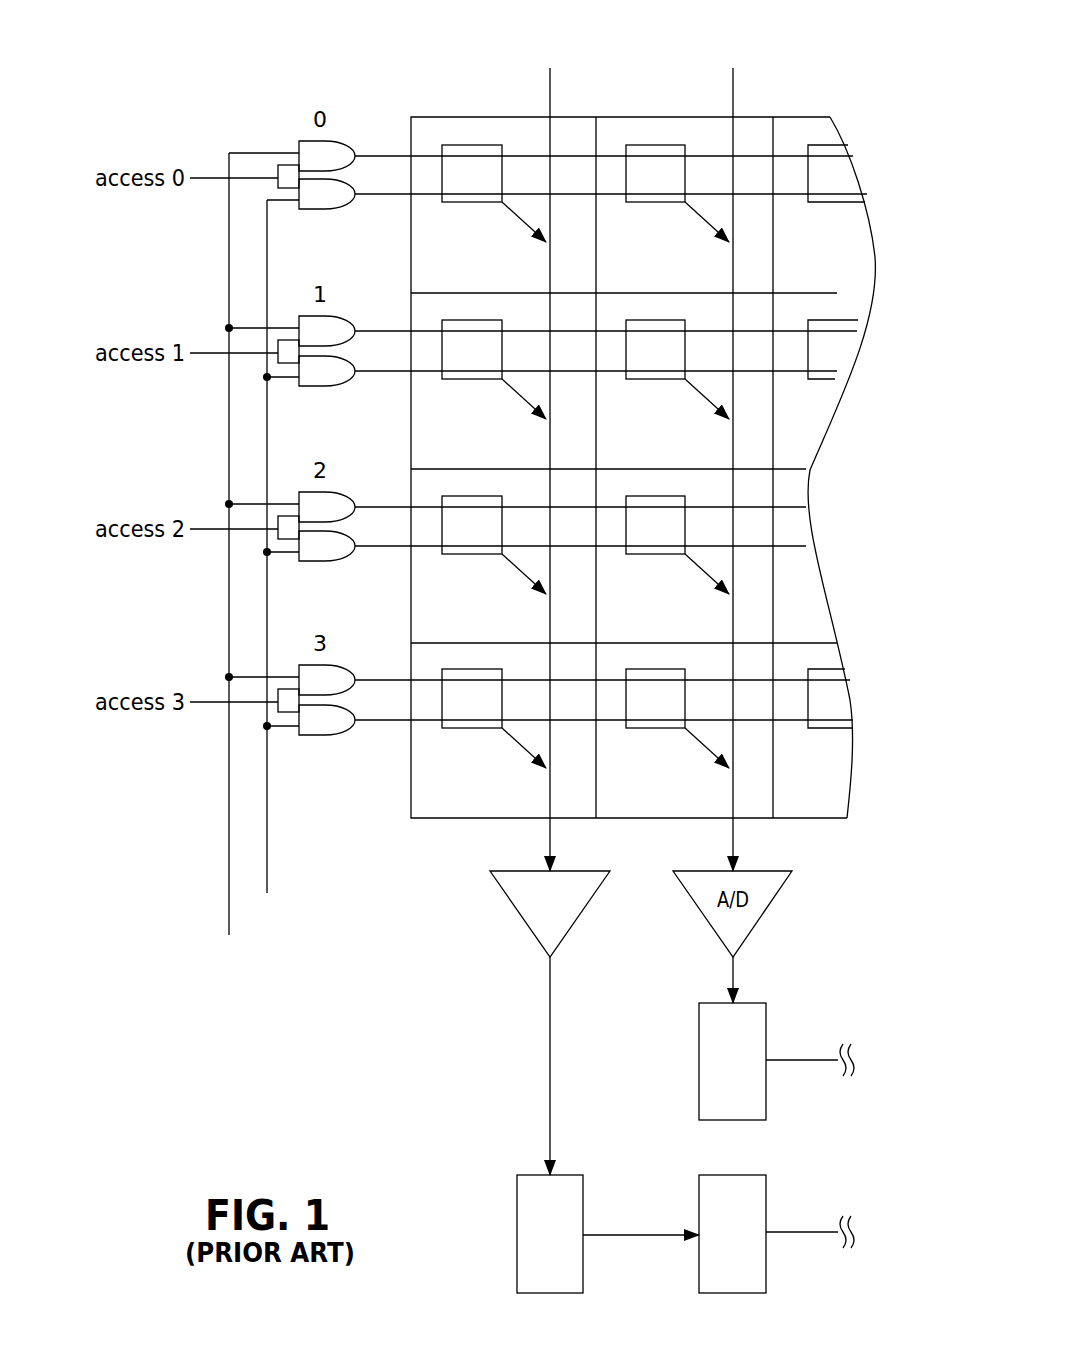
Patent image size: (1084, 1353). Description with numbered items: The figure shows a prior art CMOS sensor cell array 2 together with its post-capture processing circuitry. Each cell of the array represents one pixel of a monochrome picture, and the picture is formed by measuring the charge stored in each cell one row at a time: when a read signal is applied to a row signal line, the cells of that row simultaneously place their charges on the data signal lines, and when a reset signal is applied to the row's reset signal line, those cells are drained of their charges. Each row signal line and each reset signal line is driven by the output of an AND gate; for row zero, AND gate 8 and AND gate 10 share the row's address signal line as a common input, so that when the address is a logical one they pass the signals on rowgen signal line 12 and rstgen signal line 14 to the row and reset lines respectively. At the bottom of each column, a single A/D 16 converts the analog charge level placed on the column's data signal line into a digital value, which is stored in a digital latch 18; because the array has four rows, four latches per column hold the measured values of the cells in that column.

The CMOS sensor cell array 2 is at (893, 123).
The AND gate 8 is at (300, 142).
The AND gate 10 is at (308, 209).
The rowgen signal line 12 is at (228, 858).
The rstgen signal line 14 is at (268, 852).
The A/D 16 is at (577, 921).
The digital latch 18 is at (583, 1196).